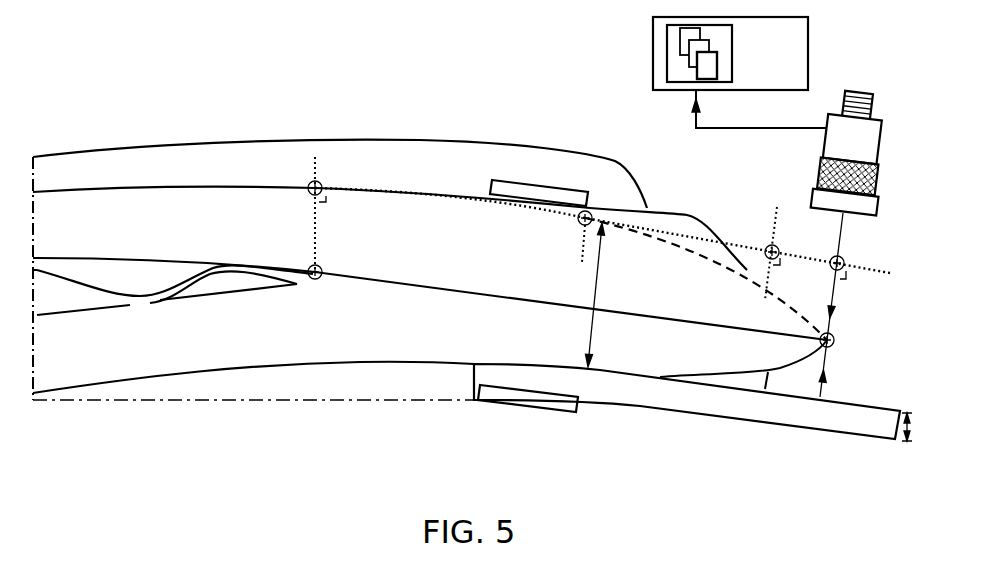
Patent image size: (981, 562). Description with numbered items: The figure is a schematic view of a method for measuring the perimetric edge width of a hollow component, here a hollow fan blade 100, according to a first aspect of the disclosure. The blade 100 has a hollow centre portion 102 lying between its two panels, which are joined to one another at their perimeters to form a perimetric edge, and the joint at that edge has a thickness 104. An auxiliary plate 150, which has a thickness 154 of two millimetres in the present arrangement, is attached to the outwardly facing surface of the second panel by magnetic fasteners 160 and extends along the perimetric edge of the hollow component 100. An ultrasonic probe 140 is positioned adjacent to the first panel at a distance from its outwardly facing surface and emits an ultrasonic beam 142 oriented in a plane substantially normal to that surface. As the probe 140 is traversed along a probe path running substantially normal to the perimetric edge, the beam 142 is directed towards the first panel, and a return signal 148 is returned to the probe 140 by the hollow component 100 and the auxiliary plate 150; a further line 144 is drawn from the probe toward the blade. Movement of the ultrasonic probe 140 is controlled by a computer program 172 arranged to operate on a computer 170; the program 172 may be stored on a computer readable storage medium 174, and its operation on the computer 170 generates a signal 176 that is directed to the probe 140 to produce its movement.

The hollow fan blade 100 is at (575, 133).
The centre portion 102 is at (90, 208).
The thickness 104 is at (602, 267).
The ultrasonic probe 140 is at (827, 140).
The ultrasonic beam 142 is at (830, 312).
The sensor axis 144 is at (840, 227).
The return signal 148 is at (830, 375).
The auxiliary plate 150 is at (868, 420).
The thickness 154 is at (895, 438).
The magnetic fasteners 160 is at (540, 185).
The computer 170 is at (812, 29).
The computer program 172 is at (678, 43).
The computer readable storage medium 174 is at (733, 75).
The signal 176 is at (692, 108).